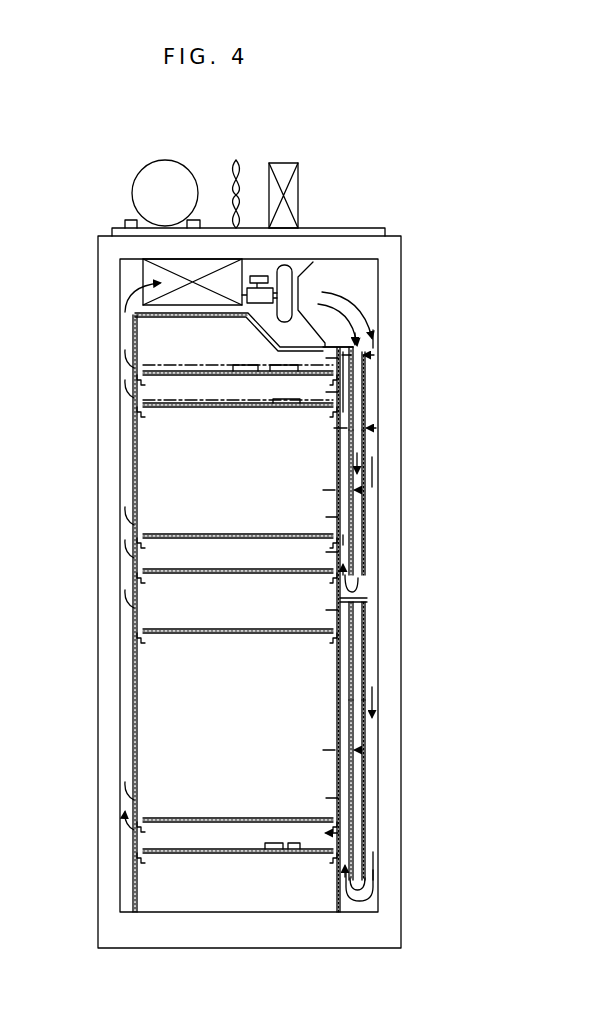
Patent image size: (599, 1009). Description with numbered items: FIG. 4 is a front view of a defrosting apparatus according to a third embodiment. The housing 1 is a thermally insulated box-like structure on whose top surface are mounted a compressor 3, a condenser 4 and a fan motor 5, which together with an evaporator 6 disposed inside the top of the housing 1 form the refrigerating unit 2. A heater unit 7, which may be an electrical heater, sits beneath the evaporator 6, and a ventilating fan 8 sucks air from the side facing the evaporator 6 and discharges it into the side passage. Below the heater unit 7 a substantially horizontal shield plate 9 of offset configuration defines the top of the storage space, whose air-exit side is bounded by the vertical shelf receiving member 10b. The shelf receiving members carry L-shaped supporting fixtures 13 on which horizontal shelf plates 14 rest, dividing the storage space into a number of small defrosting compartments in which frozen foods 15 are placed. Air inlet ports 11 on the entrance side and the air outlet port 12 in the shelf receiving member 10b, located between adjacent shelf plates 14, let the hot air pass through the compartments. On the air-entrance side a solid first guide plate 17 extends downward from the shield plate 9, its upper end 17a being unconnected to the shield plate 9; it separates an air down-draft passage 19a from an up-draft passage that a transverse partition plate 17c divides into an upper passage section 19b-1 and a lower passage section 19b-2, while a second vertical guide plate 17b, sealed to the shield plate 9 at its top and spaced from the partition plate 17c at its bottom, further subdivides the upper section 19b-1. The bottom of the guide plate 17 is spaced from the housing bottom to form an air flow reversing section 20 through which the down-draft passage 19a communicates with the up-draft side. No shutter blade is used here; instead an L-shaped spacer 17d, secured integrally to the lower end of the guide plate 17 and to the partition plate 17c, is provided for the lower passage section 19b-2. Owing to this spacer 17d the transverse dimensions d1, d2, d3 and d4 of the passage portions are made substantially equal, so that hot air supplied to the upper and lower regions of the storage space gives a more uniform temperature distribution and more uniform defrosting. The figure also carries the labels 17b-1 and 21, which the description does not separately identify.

The housing 1 is at (385, 236).
The refrigerating unit 2 is at (312, 169).
The compressor 3 is at (158, 175).
The condenser 4 is at (298, 191).
The fan motor 5 is at (236, 160).
The evaporator 6 is at (146, 266).
The heater unit 7 is at (165, 292).
The ventilating fan 8 is at (298, 272).
The shield plate 9 is at (140, 322).
The shelf receiving member 10b is at (137, 592).
The air inlet port 11 is at (345, 412).
The air outlet port 12 is at (135, 402).
The L-shaped supporting fixtures 13 is at (330, 418).
The shelf plates 14 is at (140, 430).
The frozen foods 15 is at (233, 367).
The first guide plate 17 is at (352, 612).
The upper end of first guide plate 17a is at (365, 373).
The second vertical guide plate 17b is at (350, 505).
The duct partition 17b-1 is at (355, 422).
The transverse partition plate 17c is at (362, 612).
The spacer 17d is at (353, 733).
The air down-draft passage 19a is at (373, 740).
The upper passage section 19b-1 is at (355, 560).
The lower passage section 19b-2 is at (345, 710).
The air flow reversing section 20 is at (360, 906).
The intermediate turn portion 21 is at (352, 584).
The transverse dimension d1 is at (383, 355).
The transverse dimension d2 is at (360, 430).
The transverse dimension d3 is at (338, 490).
The transverse dimension d4 is at (338, 762).